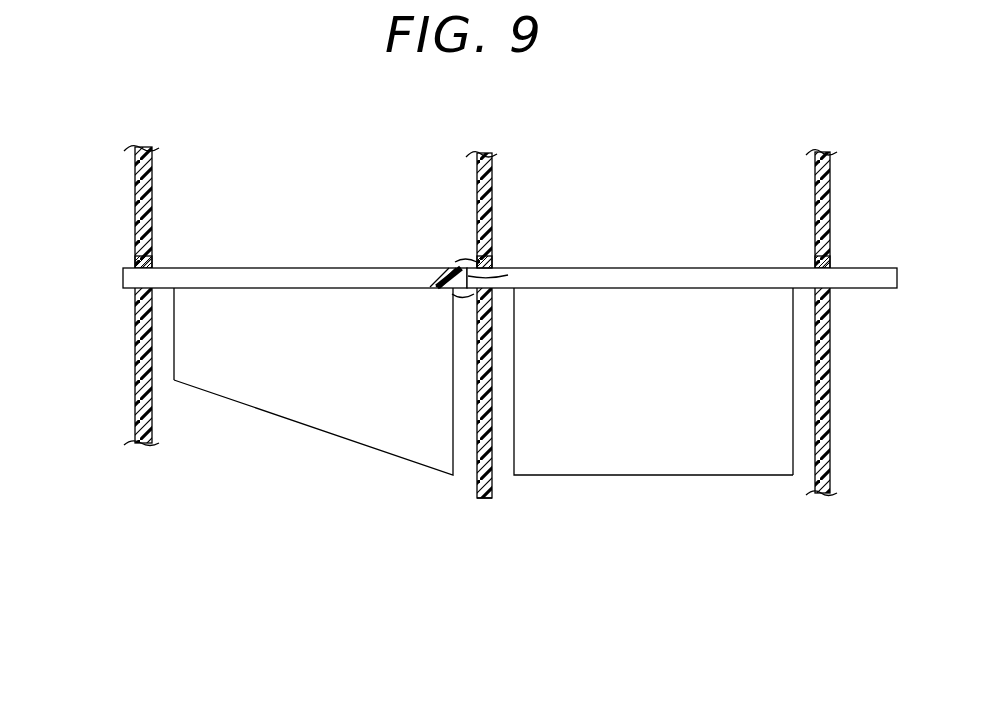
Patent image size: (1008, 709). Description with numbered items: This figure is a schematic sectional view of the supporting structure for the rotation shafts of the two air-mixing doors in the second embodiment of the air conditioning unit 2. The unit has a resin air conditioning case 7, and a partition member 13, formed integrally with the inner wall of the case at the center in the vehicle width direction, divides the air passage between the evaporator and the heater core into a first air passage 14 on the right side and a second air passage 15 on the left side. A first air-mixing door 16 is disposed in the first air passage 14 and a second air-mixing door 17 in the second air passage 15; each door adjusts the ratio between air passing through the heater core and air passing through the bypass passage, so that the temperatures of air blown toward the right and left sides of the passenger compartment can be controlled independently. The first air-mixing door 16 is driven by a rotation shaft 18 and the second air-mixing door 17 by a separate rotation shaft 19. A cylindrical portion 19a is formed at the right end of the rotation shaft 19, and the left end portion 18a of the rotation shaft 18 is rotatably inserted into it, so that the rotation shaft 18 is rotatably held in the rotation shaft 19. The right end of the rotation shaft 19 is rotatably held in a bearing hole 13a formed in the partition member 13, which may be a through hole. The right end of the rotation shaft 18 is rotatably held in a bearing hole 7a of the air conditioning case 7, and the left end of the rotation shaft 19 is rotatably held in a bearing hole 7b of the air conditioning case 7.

The air conditioning unit 2 is at (855, 323).
The air conditioning case 7 is at (832, 211).
The bearing hole 7a is at (831, 255).
The bearing hole 7b is at (141, 255).
The partition member 13 is at (478, 487).
The bearing hole 13a is at (493, 257).
The first air passage 14 is at (665, 493).
The second air passage 15 is at (303, 453).
The first air-mixing door 16 is at (772, 387).
The second air-mixing door 17 is at (190, 340).
The rotation shaft 18 is at (697, 270).
The left end portion 18a is at (478, 279).
The rotation shaft 19 is at (225, 277).
The cylindrical portion 19a is at (465, 260).